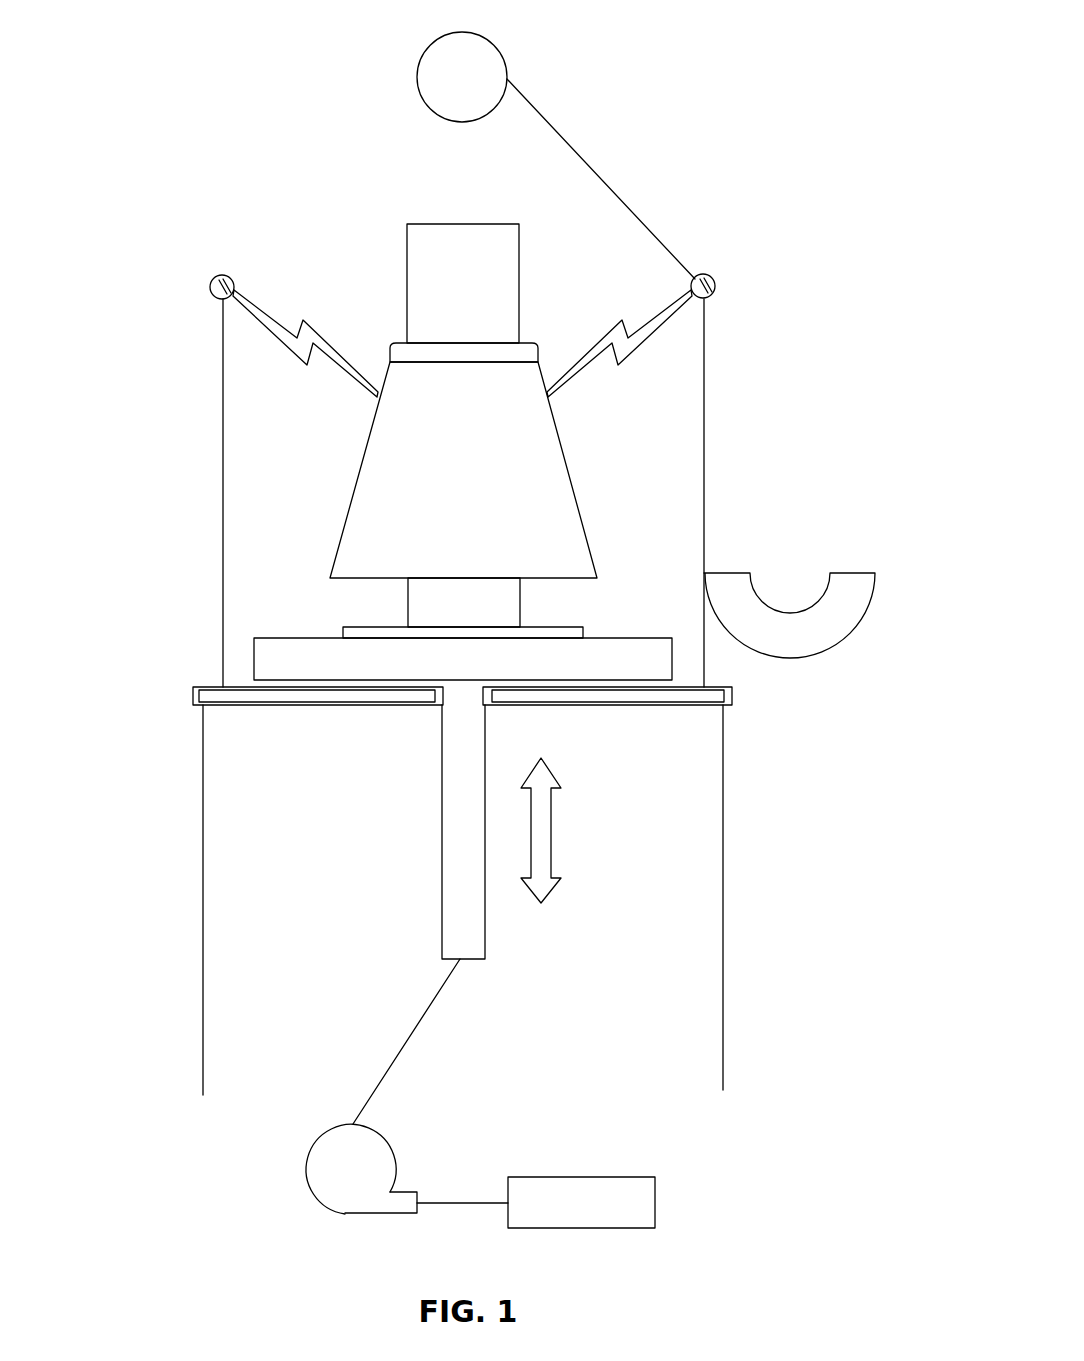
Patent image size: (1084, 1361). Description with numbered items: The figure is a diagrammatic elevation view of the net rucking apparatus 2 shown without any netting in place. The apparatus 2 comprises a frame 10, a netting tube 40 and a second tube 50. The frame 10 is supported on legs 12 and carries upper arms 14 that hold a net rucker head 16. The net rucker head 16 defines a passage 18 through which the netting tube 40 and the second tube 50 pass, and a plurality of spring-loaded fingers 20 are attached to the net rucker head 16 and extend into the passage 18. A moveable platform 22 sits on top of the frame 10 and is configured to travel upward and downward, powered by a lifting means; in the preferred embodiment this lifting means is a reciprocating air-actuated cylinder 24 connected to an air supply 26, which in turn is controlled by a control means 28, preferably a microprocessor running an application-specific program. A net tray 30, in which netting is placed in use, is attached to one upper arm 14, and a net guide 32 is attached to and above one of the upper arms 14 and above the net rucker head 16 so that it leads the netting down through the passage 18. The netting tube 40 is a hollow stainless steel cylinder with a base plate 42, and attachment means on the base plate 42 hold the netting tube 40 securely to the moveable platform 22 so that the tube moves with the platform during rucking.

The net rucking apparatus 2 is at (760, 766).
The frame 10 is at (212, 686).
The legs 12 is at (193, 909).
The upper arms 14 is at (212, 508).
The net rucker head 16 is at (216, 276).
The passage 18 is at (350, 300).
The spring-loaded fingers 20 is at (303, 358).
The moveable platform 22 is at (308, 637).
The reciprocating air-actuated cylinder 24 is at (442, 814).
The air supply 26 is at (342, 1124).
The control means 28 is at (562, 1177).
The net tray 30 is at (845, 573).
The net guide 32 is at (462, 32).
The netting tube 40 is at (457, 224).
The base plate 42 is at (398, 627).
The second tube 50 is at (360, 473).